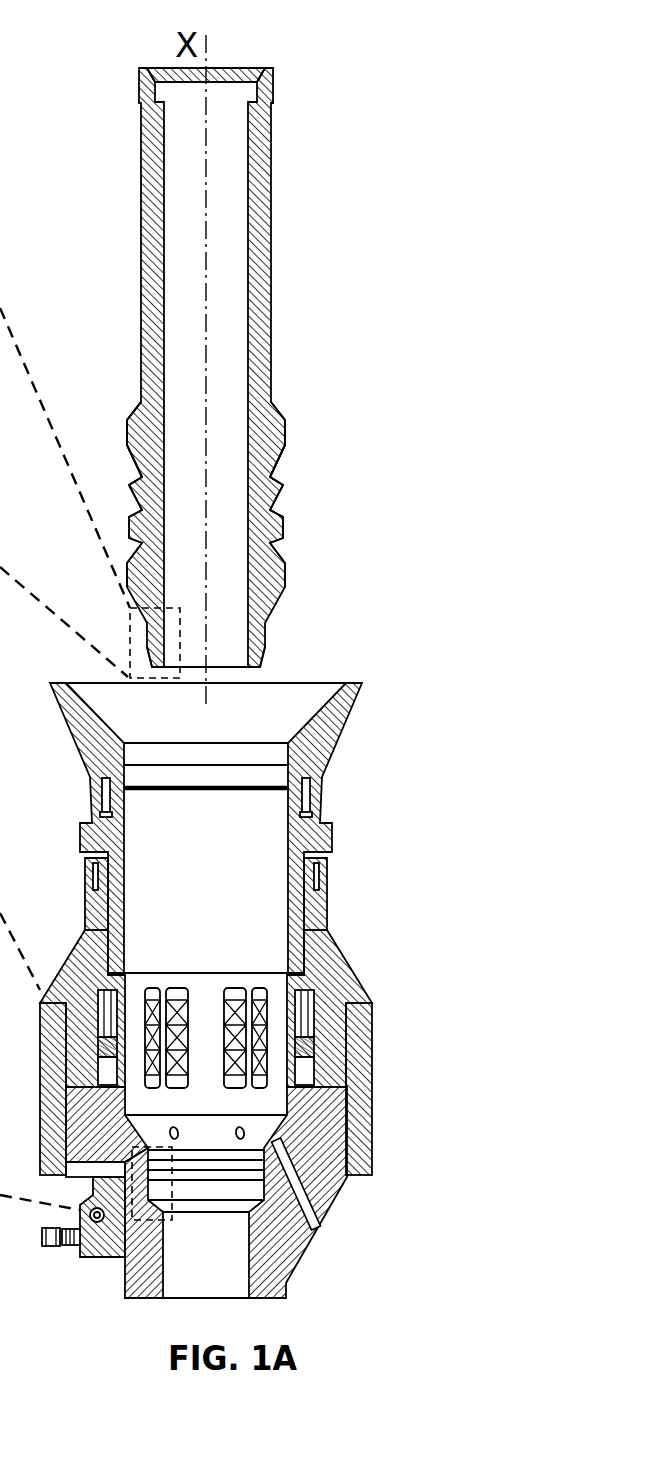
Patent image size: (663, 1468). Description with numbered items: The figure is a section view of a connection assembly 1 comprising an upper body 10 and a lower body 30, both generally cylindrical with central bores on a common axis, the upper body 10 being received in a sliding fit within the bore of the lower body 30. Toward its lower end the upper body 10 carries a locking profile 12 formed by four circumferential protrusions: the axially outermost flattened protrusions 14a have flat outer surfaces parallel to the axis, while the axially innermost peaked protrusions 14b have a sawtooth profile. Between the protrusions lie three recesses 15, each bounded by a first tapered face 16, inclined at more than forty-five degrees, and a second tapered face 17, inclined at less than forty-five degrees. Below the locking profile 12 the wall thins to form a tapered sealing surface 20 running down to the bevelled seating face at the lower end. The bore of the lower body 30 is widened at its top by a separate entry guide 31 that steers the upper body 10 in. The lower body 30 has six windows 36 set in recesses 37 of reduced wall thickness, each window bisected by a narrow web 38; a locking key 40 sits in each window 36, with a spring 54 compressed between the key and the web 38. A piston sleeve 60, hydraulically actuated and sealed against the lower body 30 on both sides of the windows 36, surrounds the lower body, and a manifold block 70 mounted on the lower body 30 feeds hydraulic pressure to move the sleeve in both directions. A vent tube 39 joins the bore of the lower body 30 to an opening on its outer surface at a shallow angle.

The connection assembly 1 is at (395, 108).
The upper body 10 is at (142, 137).
The locking profile 12 is at (360, 497).
The flattened protrusion 14a is at (285, 428).
The peaked protrusion 14b is at (272, 512).
The circumferential recess 15 is at (300, 468).
The first tapered face 16 is at (133, 478).
The second tapered face 17 is at (127, 447).
The sealing surface 20 is at (343, 631).
The lower body 30 is at (350, 1188).
The entry guide 31 is at (330, 755).
The window 36 is at (150, 985).
The recess 37 is at (72, 978).
The dividing member 38 is at (162, 985).
The vent tube 39 is at (320, 1230).
The locking key 40 is at (333, 1070).
The spring 54 is at (318, 1043).
The piston sleeve 60 is at (343, 962).
The manifold block 70 is at (107, 1257).